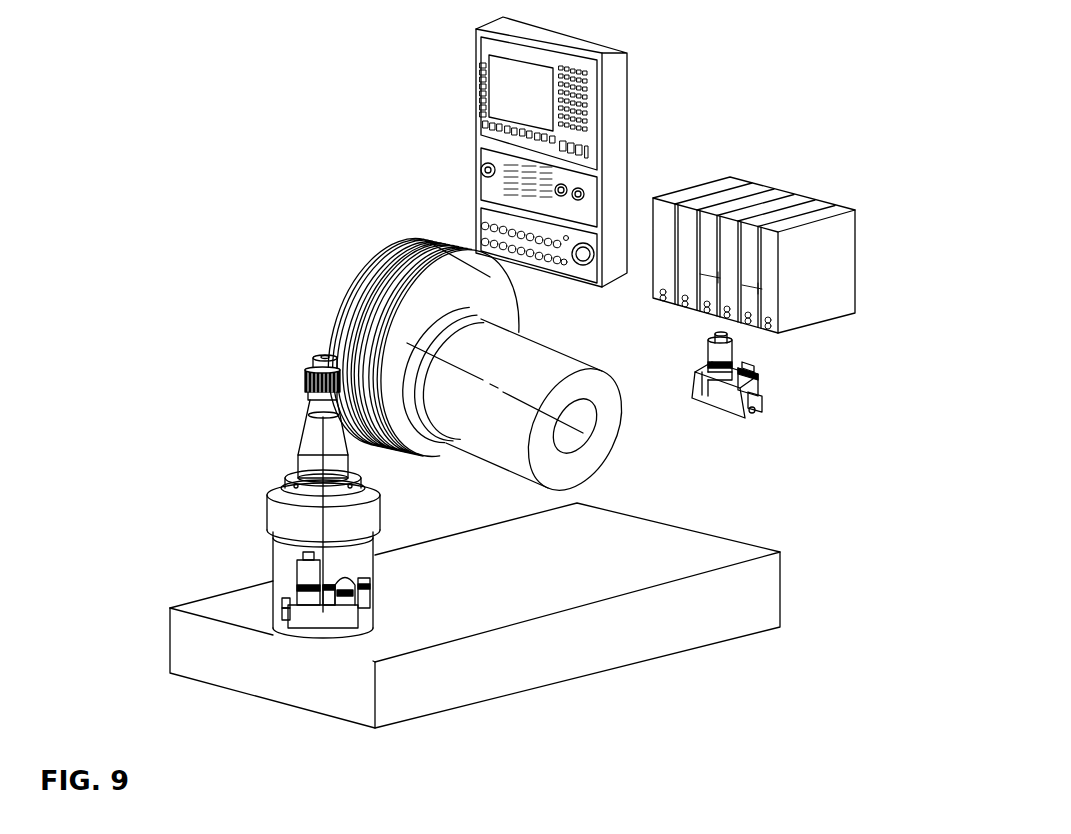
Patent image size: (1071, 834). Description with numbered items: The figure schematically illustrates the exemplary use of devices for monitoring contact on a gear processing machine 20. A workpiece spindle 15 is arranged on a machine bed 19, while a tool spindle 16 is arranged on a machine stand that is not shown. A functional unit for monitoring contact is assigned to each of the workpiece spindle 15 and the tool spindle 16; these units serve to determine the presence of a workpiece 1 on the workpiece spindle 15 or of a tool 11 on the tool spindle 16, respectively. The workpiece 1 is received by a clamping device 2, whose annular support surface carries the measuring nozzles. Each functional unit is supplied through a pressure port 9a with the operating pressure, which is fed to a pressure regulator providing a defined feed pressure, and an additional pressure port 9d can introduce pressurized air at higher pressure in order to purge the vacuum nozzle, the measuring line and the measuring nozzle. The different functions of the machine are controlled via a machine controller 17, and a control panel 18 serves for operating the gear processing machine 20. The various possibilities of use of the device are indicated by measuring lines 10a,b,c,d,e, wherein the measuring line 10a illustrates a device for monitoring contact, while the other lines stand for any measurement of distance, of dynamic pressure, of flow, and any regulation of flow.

The workpiece 1 is at (308, 374).
The clamping device 2 is at (342, 424).
The pressure port 9a is at (753, 377).
The additional pressure port 9d is at (742, 367).
The measuring line 10a is at (290, 617).
The measuring lines 10a,b,c,d,e is at (697, 372).
The tool 11 is at (353, 317).
The workpiece spindle 15 is at (357, 522).
The tool spindle 16 is at (595, 457).
The machine controller 17 is at (810, 278).
The control panel 18 is at (492, 98).
The machine bed 19 is at (418, 697).
The gear processing machine 20 is at (717, 125).